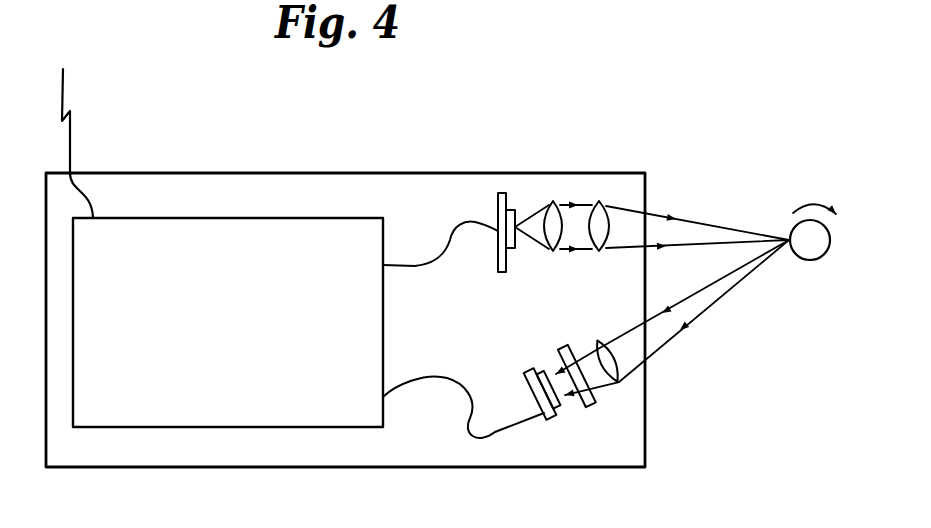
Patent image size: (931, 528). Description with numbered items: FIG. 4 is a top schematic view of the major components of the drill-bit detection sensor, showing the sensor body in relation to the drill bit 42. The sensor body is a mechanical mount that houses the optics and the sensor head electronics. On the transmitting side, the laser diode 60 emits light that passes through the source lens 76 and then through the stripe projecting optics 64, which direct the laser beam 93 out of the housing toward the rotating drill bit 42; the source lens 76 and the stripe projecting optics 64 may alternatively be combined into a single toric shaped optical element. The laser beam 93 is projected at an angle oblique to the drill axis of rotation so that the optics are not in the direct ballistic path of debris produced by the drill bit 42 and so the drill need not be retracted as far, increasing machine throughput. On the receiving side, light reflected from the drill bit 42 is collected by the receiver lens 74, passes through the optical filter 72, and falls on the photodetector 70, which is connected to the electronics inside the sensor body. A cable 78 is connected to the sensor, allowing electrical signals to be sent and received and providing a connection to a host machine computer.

The drill bit 42 is at (818, 261).
The laser diode 60 is at (514, 199).
The stripe projecting optics 64 is at (611, 206).
The photodetector 70 is at (553, 424).
The optical filter 72 is at (602, 404).
The receiver lens 74 is at (620, 385).
The source lens 76 is at (552, 198).
The cable 78 is at (70, 116).
The laser beam 93 is at (704, 214).